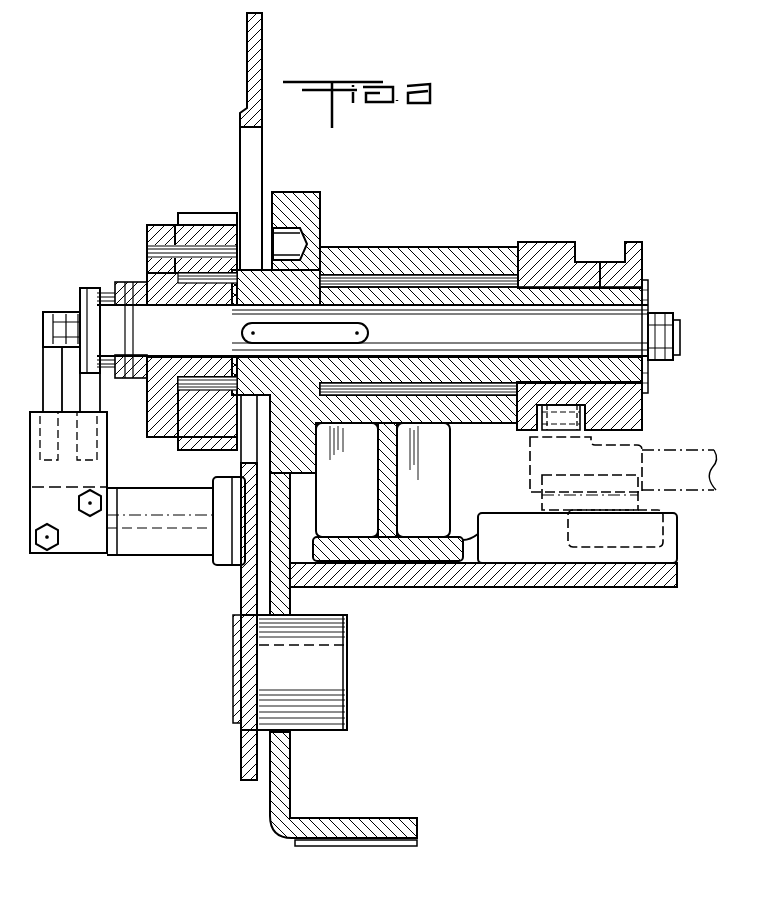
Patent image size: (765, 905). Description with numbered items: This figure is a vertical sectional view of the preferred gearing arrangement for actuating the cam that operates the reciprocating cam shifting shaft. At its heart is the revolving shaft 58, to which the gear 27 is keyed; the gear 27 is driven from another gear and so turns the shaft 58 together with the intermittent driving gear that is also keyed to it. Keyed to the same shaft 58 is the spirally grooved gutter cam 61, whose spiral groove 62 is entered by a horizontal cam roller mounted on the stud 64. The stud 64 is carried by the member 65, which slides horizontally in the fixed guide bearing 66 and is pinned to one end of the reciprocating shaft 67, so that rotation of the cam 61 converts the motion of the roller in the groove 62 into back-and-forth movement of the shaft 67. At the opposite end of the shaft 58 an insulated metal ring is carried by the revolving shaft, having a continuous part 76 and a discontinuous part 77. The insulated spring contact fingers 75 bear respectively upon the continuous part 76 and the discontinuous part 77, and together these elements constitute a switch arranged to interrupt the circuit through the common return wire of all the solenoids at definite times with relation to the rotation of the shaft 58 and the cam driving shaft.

The gear 27 is at (157, 226).
The shaft 58 is at (325, 318).
The spirally grooved gutter cam 61 is at (548, 252).
The spiral groove 62 is at (598, 264).
The stud 64 is at (590, 423).
The member 65 is at (529, 466).
The fixed guide bearing 66 is at (598, 500).
The reciprocating shaft 67 is at (712, 485).
The insulated spring contact fingers 75 is at (85, 388).
The continuous part 76 is at (91, 288).
The discontinuous part 77 is at (45, 318).